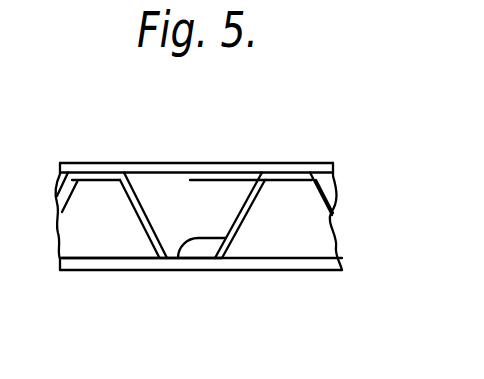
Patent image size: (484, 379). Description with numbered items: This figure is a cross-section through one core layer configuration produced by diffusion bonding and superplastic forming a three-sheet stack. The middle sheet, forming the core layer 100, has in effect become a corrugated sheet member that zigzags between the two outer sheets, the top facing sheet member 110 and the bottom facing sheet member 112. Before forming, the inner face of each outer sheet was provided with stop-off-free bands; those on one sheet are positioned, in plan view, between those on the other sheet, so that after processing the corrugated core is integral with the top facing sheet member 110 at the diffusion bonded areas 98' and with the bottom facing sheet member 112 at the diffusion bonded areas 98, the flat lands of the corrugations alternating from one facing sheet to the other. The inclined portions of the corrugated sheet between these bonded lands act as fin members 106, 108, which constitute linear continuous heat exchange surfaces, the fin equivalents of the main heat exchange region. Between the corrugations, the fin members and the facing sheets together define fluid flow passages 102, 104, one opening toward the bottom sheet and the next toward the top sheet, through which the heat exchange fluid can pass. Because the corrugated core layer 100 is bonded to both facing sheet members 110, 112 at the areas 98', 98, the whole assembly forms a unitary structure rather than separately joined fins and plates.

The core layer 100 is at (342, 218).
The top facing sheet member 110 is at (62, 164).
The bottom facing sheet member 112 is at (78, 271).
The diffusion bonded area 98 is at (151, 215).
The diffusion bonded area 98' is at (299, 161).
The fluid flow passage 102 is at (112, 231).
The fluid flow passage 104 is at (190, 198).
The fin member 106 is at (138, 181).
The fin member 108 is at (178, 259).